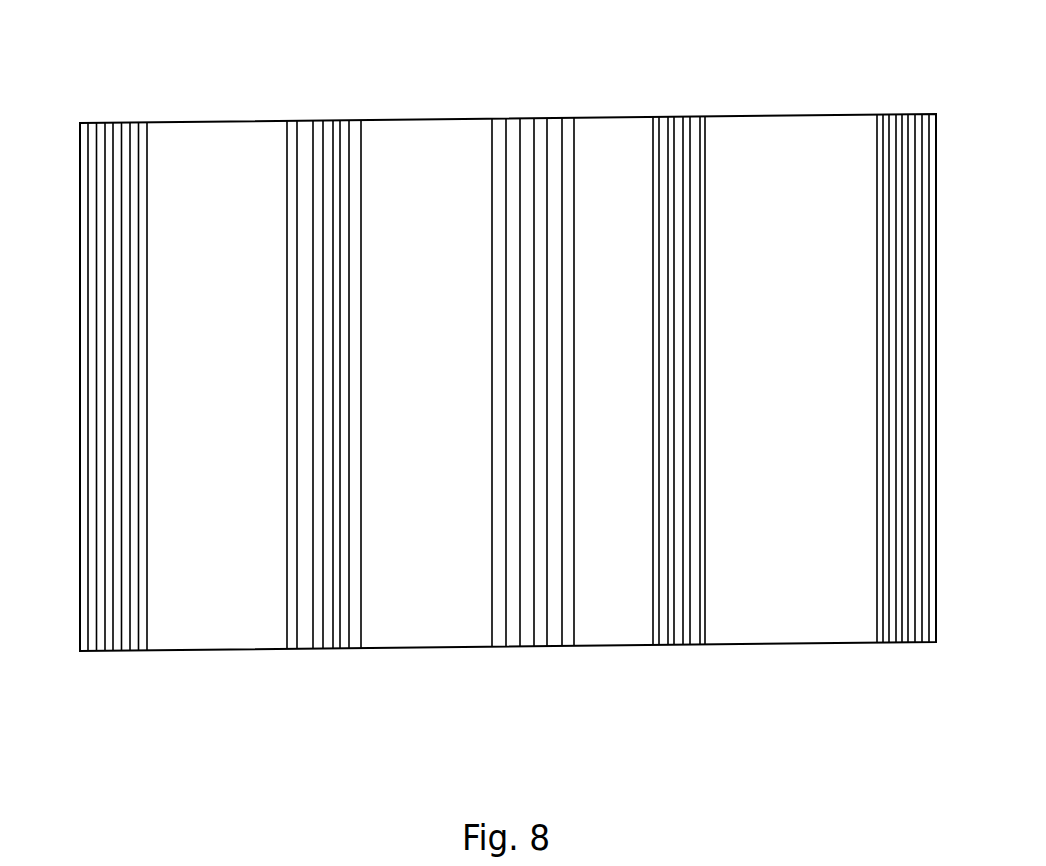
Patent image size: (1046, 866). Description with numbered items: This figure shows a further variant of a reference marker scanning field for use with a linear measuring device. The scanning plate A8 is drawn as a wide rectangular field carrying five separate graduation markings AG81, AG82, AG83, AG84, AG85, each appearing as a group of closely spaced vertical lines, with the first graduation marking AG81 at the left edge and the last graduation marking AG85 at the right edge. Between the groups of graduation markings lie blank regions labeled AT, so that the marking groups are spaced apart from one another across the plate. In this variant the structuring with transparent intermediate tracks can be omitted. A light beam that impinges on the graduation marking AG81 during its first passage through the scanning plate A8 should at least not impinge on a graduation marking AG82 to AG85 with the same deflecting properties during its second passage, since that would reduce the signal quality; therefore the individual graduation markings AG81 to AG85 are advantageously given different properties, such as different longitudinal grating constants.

The scanning plate A8 is at (194, 115).
The spacing region between bar groups AT is at (255, 125).
The graduation marking AG81 is at (110, 652).
The graduation marking AG82 is at (322, 640).
The graduation marking AG83 is at (530, 638).
The graduation marking AG84 is at (678, 637).
The graduation marking AG85 is at (905, 642).